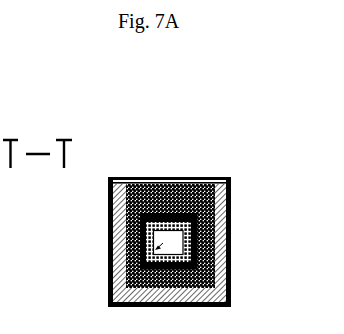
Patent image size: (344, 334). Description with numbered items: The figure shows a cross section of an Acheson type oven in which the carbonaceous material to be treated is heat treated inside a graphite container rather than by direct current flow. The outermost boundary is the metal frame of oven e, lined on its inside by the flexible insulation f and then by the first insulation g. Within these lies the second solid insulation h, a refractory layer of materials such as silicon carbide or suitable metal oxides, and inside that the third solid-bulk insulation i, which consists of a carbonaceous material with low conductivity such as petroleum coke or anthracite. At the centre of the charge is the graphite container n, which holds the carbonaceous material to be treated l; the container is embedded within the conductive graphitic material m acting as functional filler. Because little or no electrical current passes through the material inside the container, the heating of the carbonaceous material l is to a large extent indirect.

The metal frame of oven e is at (240, 173).
The flexible insulation f is at (240, 185).
The first insulation g is at (237, 200).
The second solid insulation h is at (215, 238).
The third solid-bulk insulation i is at (231, 248).
The carbonaceous material to be treated l is at (231, 273).
The conductive graphitic material m is at (231, 295).
The graphite container n is at (109, 268).